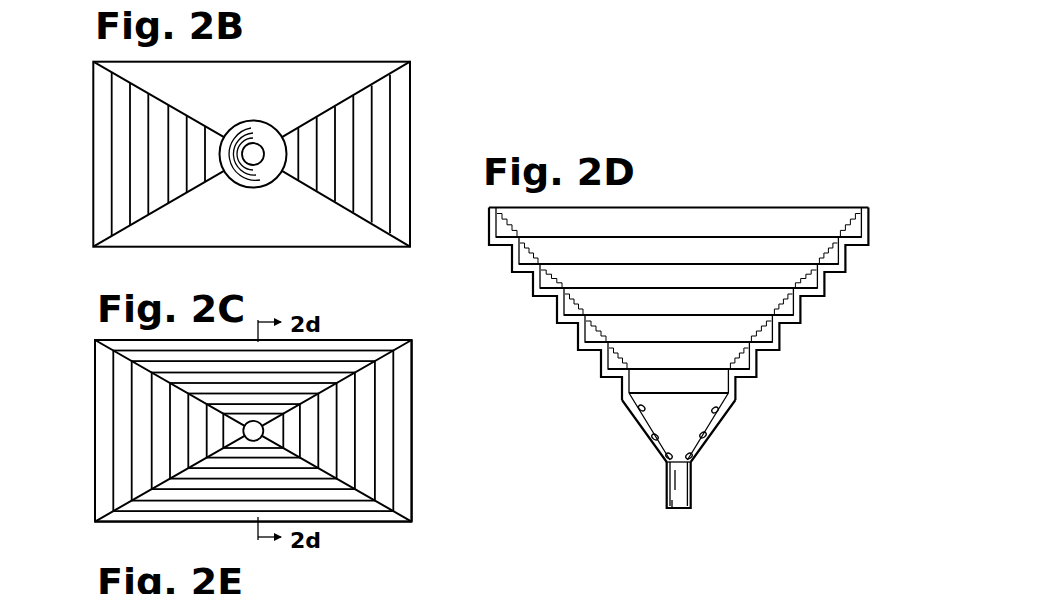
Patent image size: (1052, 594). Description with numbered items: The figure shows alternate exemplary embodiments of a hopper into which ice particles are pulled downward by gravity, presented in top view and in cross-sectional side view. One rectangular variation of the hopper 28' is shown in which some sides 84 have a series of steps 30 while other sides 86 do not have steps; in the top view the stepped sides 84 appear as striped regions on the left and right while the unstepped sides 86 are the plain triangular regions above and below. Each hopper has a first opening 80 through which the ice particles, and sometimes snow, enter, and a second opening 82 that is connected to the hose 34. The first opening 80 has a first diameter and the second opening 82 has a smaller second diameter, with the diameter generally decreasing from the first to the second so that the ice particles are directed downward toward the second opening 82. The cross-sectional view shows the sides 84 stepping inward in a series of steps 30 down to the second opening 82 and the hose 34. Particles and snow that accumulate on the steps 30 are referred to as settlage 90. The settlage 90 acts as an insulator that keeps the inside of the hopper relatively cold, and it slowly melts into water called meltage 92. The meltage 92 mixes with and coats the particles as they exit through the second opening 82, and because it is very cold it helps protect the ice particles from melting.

In FIG. 2B, the hopper 28' is at (251, 124).
In FIG. 2B, the steps 30 is at (355, 178).
In FIG. 2C, the steps 30 is at (377, 482).
In FIG. 2D, the steps 30 is at (820, 268).
In FIG. 2D, the hose 34 is at (692, 477).
In FIG. 2B, the first opening 80 is at (412, 133).
In FIG. 2C, the first opening 80 is at (413, 412).
In FIG. 2D, the first opening 80 is at (682, 207).
In FIG. 2B, the second opening 82 is at (258, 152).
In FIG. 2C, the second opening 82 is at (244, 432).
In FIG. 2D, the second opening 82 is at (667, 448).
In FIG. 2B, the sides 84 is at (123, 130).
In FIG. 2C, the sides 84 is at (197, 503).
In FIG. 2D, the sides 84 is at (532, 292).
In FIG. 2B, the sides 86 is at (338, 70).
In FIG. 2D, the settlage 90 is at (588, 332).
In FIG. 2D, the meltage 92 is at (713, 430).